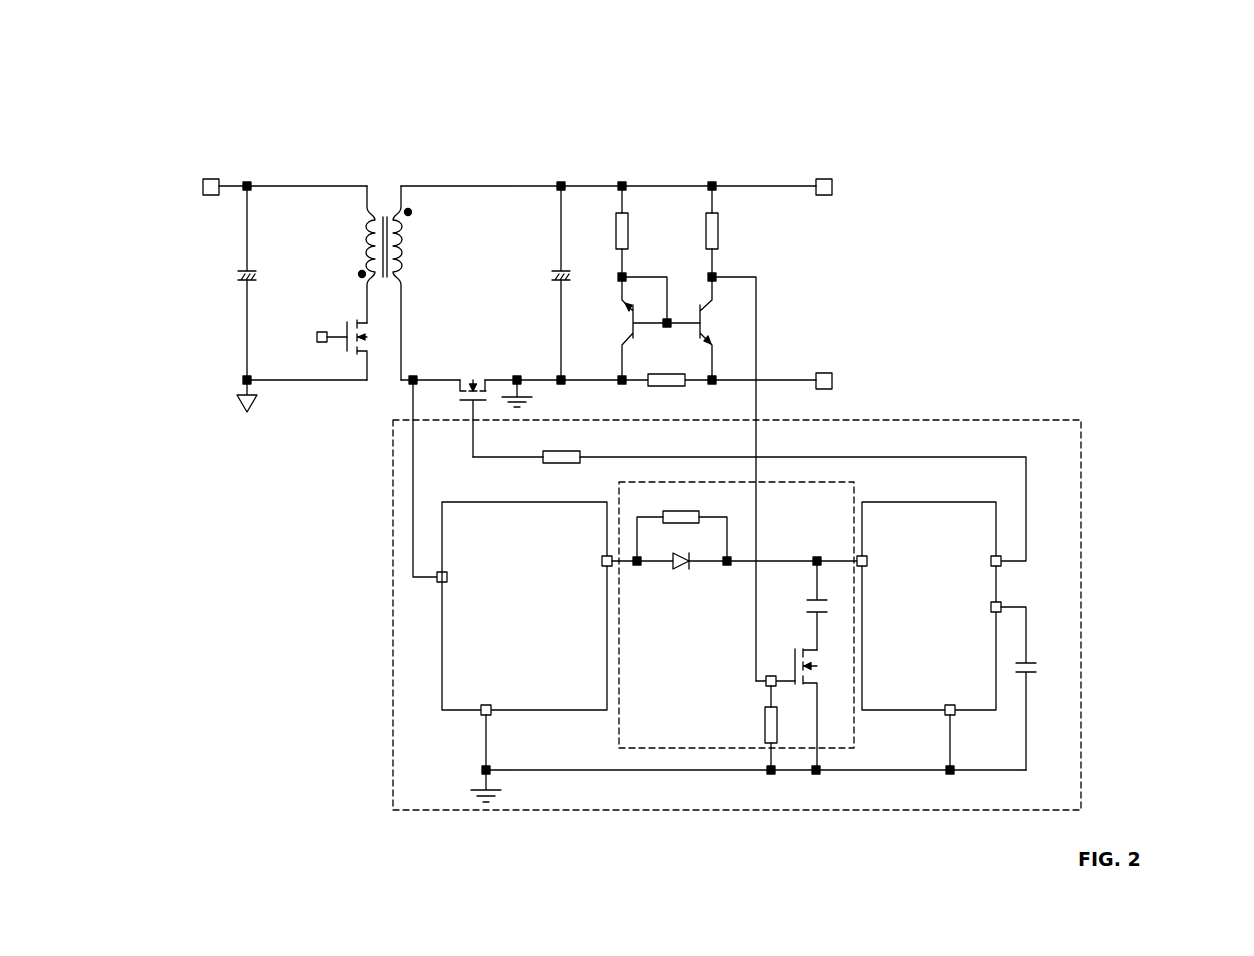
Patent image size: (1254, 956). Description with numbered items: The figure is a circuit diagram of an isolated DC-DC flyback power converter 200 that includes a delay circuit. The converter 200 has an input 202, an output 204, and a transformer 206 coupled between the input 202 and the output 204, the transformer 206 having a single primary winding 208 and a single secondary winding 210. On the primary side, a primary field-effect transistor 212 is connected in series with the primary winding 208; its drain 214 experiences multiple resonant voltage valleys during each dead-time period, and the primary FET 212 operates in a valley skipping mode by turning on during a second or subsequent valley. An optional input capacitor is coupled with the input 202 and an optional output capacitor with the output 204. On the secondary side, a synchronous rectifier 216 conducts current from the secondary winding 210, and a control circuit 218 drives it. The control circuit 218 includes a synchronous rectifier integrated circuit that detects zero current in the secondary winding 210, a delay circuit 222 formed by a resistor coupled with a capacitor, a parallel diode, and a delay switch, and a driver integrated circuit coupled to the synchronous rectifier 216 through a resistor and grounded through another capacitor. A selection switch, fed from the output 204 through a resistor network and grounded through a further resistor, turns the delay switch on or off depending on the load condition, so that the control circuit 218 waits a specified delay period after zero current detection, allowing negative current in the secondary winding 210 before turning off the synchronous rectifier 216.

The isolated DC-DC flyback power converter 200 is at (1040, 147).
The input 202 is at (213, 178).
The output 204 is at (825, 178).
The transformer 206 is at (390, 184).
The primary winding 208 is at (345, 243).
The secondary winding 210 is at (428, 240).
The primary field-effect transistor 212 is at (336, 328).
The drain 214 is at (367, 302).
The synchronous rectifier 216 is at (469, 370).
The control circuit 218 is at (393, 600).
The delay circuit 222 is at (619, 725).